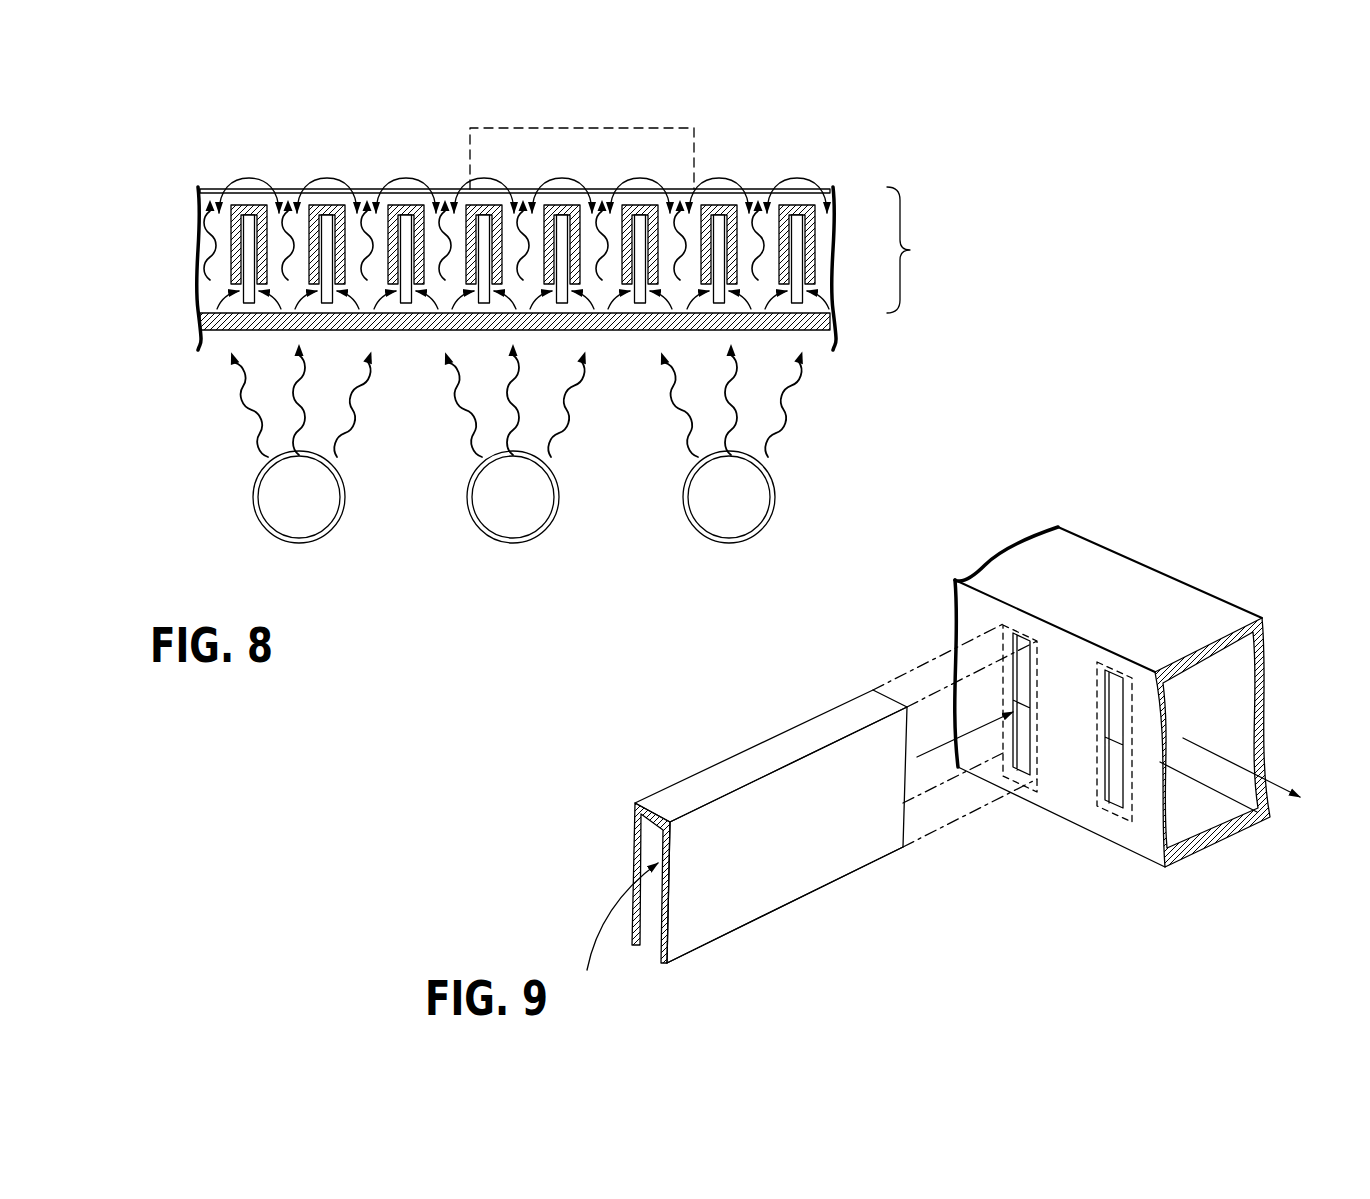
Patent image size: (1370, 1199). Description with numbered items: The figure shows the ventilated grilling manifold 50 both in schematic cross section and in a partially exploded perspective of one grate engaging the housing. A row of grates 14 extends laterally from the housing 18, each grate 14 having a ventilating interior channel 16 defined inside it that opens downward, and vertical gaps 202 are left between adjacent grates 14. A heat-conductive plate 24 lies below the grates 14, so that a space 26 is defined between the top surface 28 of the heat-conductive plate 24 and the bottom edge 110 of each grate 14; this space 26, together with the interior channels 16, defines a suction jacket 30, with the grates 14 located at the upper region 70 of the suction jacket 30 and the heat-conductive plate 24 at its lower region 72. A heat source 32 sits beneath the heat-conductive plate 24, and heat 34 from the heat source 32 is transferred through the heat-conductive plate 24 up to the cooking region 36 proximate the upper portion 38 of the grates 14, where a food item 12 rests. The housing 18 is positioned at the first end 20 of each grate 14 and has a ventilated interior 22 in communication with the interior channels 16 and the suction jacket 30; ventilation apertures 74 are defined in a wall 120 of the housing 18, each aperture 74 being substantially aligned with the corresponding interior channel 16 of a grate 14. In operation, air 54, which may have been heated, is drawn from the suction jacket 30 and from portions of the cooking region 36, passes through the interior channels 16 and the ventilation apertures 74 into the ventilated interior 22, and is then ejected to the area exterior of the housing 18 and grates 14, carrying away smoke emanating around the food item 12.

In FIG. 8, the food item 12 is at (653, 128).
In FIG. 8, the grate 14 is at (504, 251).
In FIG. 9, the grate 14 is at (775, 830).
In FIG. 8, the interior channel 16 is at (800, 210).
In FIG. 9, the interior channel 16 is at (657, 832).
In FIG. 8, the housing 18 is at (360, 189).
In FIG. 9, the housing 18 is at (1112, 702).
In FIG. 9, the first end 20 is at (905, 822).
In FIG. 8, the ventilated interior 22 is at (762, 195).
In FIG. 9, the ventilated interior 22 is at (1212, 670).
In FIG. 8, the heat-conductive plate 24 is at (503, 377).
In FIG. 8, the space 26 is at (220, 291).
In FIG. 8, the top surface 28 is at (374, 310).
In FIG. 8, the suction jacket 30 is at (916, 250).
In FIG. 8, the heat source 32 is at (338, 518).
In FIG. 8, the heat 34 is at (198, 222).
In FIG. 8, the cooking region 36 is at (455, 183).
In FIG. 8, the upper portion 38 is at (561, 198).
In FIG. 9, the upper portion 38 is at (700, 788).
In FIG. 8, the ventilated grilling manifold 50 is at (180, 160).
In FIG. 8, the air 54 is at (243, 192).
In FIG. 9, the air 54 is at (612, 893).
In FIG. 8, the upper region 70 is at (822, 236).
In FIG. 8, the lower region 72 is at (834, 300).
In FIG. 8, the ventilation aperture 74 is at (796, 292).
In FIG. 9, the ventilation aperture 74 is at (1023, 668).
In FIG. 8, the bottom edge 110 is at (262, 287).
In FIG. 9, the bottom edge 110 is at (725, 937).
In FIG. 8, the wall 120 is at (680, 292).
In FIG. 9, the wall 120 is at (1069, 702).
In FIG. 8, the vertical gap 202 is at (447, 296).